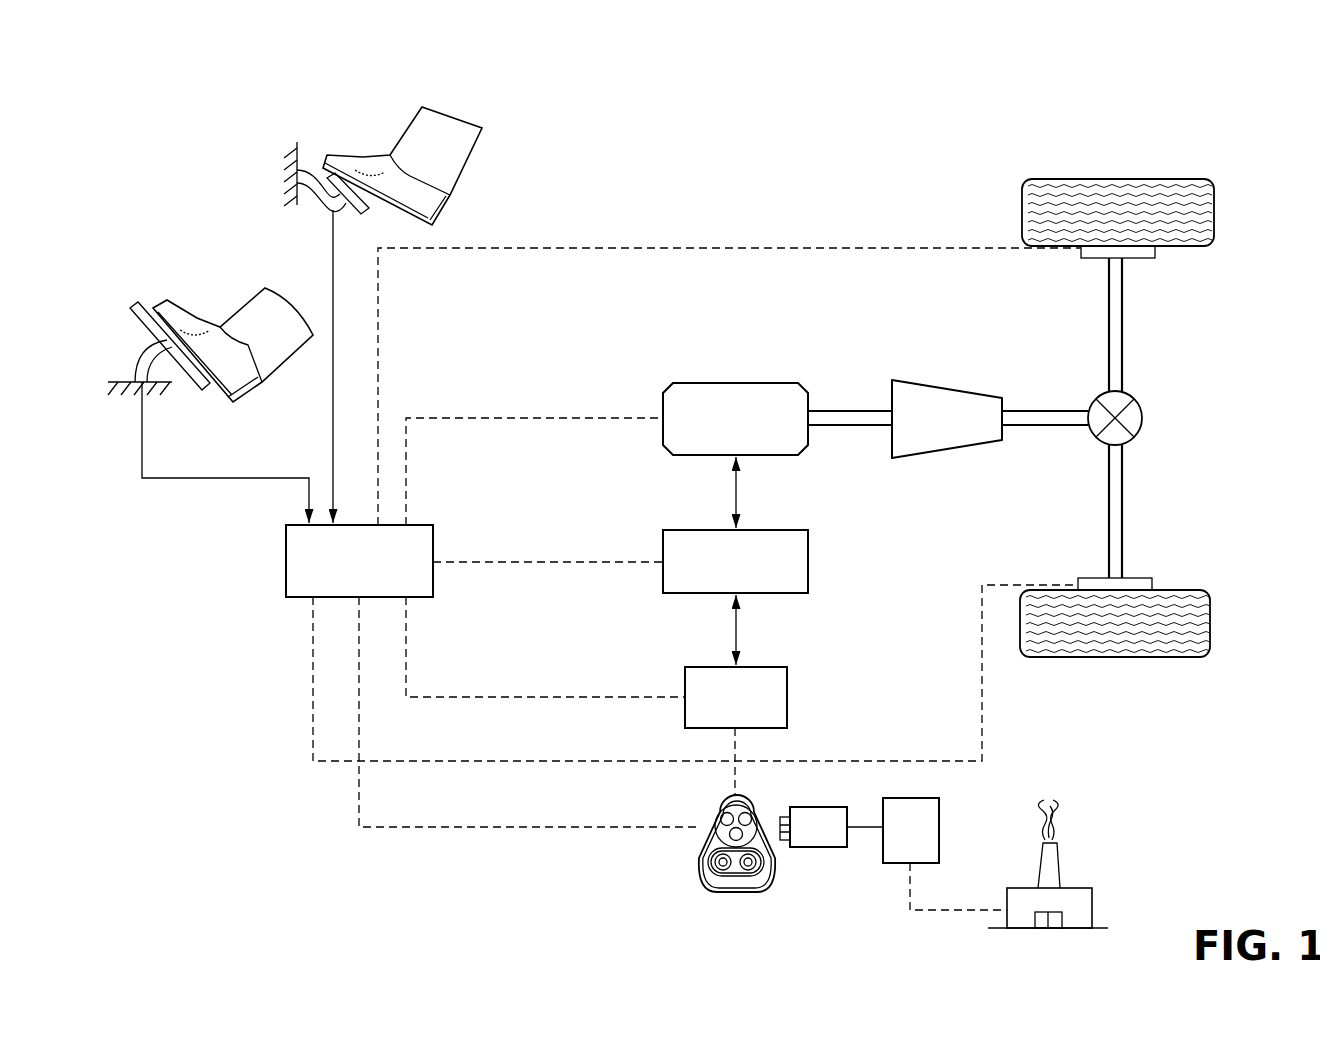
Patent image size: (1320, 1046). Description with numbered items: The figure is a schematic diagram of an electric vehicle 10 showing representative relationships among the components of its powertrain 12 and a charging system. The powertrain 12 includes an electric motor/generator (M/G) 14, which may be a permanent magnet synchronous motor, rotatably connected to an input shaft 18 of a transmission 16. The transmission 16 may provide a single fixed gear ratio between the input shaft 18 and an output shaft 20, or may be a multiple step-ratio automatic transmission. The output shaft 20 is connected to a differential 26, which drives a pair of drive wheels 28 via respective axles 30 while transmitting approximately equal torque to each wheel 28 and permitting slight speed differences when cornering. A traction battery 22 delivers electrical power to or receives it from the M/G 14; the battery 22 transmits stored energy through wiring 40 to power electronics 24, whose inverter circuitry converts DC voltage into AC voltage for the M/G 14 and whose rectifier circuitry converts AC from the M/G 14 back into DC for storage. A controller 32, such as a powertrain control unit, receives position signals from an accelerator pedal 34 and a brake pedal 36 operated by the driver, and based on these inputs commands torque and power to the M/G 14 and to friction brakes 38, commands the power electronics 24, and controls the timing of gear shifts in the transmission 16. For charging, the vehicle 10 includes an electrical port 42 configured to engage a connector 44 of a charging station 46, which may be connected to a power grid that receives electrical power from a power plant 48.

The electric vehicle 10 is at (912, 90).
The powertrain 12 is at (786, 306).
The electric motor/generator (M/G) 14 is at (663, 405).
The transmission 16 is at (947, 383).
The input shaft 18 is at (857, 410).
The output shaft 20 is at (1035, 412).
The traction battery 22 is at (685, 687).
The power electronics 24 is at (663, 547).
The differential 26 is at (1143, 418).
The drive wheels 28 is at (1120, 178).
The axles 30 is at (1126, 322).
The controller 32 is at (286, 562).
The accelerator pedal 34 is at (196, 281).
The brake pedal 36 is at (369, 120).
The friction brakes 38 is at (1157, 252).
The wiring 40 is at (738, 640).
The electrical port 42 is at (736, 892).
The connector 44 is at (808, 807).
The charging station 46 is at (940, 833).
The power plant 48 is at (1073, 887).